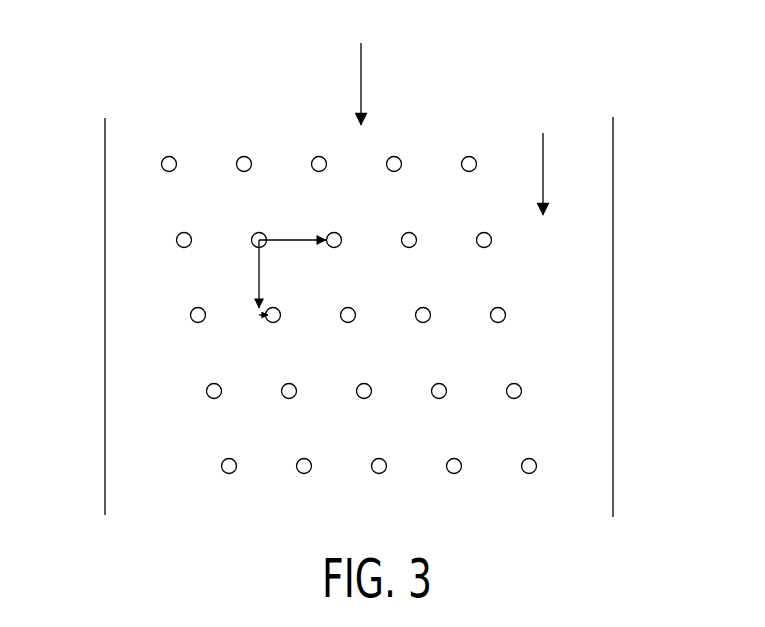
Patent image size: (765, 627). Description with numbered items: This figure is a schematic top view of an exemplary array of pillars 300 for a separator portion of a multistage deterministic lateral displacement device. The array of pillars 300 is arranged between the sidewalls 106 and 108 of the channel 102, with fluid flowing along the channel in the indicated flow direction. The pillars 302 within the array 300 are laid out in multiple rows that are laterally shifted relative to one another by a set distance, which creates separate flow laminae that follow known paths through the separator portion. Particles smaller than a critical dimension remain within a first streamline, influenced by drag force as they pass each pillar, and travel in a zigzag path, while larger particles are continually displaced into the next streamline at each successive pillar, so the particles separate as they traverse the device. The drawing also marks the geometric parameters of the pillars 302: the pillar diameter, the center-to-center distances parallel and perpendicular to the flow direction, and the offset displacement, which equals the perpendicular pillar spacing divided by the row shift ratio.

The array of pillars 300 is at (623, 92).
The channel 102 is at (361, 68).
The sidewall 106 is at (105, 355).
The sidewall 108 is at (613, 290).
The pillars 302 is at (168, 156).